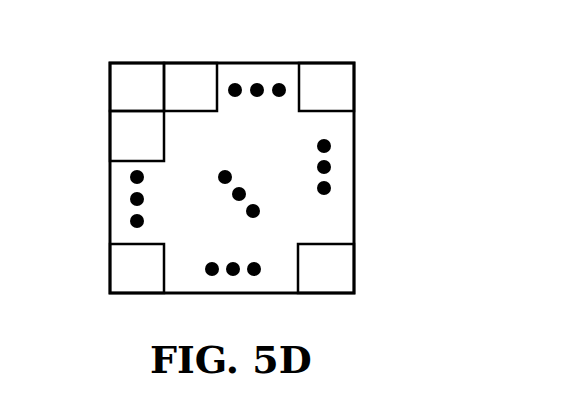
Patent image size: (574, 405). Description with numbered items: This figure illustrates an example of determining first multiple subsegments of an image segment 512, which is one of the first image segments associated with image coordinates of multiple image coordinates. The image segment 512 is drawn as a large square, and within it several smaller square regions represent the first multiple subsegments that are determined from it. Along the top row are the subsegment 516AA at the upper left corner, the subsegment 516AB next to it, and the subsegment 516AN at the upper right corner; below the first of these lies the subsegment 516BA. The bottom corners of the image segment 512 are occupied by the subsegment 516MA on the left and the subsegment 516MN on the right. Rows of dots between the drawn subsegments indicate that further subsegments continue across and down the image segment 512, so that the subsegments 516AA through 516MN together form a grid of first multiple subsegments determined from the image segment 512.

The image segment 512 is at (354, 150).
The first subsegment 516AA is at (110, 76).
The first subsegment 516AB is at (193, 63).
The first subsegment 516AN is at (354, 86).
The first subsegment 516BA is at (110, 137).
The first subsegment 516MA is at (110, 268).
The first subsegment 516MN is at (354, 280).